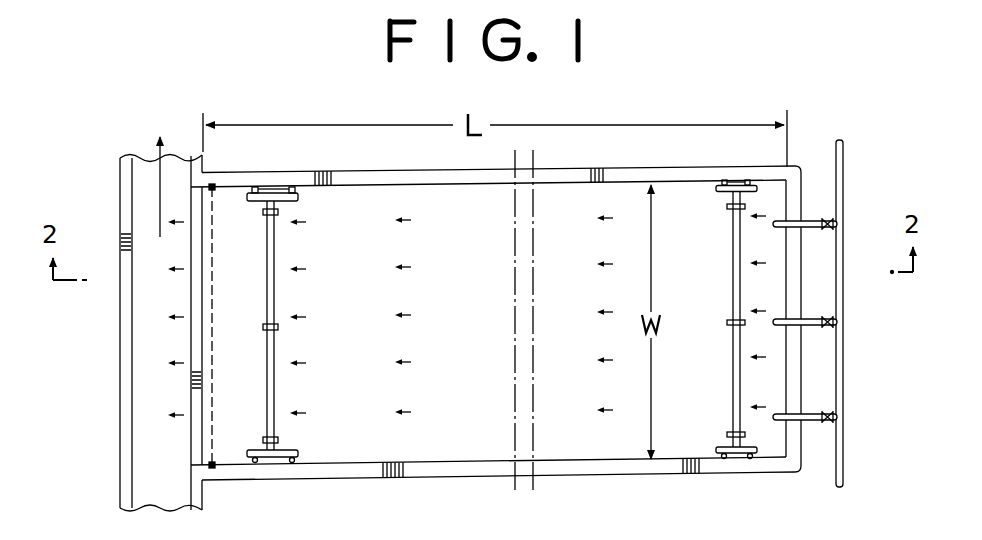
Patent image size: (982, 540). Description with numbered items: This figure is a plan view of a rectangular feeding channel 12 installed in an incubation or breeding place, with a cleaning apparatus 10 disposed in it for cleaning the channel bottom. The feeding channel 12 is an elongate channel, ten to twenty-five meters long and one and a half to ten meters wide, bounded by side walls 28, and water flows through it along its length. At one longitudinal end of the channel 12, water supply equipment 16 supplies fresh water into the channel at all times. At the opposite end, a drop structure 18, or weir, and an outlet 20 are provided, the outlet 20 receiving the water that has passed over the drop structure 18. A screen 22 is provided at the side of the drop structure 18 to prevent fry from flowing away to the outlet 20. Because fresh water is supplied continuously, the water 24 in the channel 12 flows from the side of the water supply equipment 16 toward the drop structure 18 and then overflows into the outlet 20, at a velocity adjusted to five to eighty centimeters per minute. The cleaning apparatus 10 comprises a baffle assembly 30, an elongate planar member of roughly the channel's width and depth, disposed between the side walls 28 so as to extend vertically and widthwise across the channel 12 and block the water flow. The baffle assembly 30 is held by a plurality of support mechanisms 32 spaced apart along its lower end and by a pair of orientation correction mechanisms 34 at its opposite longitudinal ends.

The cleaning apparatus 10 is at (502, 321).
The feeding channel 12 is at (496, 322).
The water supply equipment 16 is at (843, 289).
The drop structure 18 is at (197, 446).
The outlet 20 is at (155, 312).
The screen 22 is at (212, 343).
The water 24 is at (595, 440).
The side walls 28 is at (672, 170).
The baffle assembly 30 is at (274, 377).
The support mechanisms 32 is at (279, 438).
The orientation correction mechanisms 34 is at (296, 457).